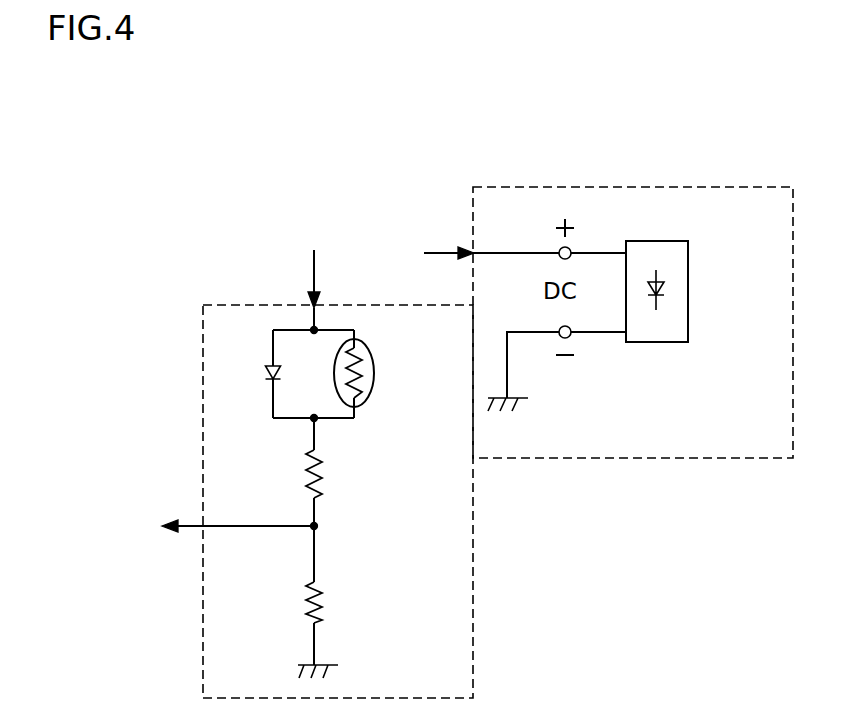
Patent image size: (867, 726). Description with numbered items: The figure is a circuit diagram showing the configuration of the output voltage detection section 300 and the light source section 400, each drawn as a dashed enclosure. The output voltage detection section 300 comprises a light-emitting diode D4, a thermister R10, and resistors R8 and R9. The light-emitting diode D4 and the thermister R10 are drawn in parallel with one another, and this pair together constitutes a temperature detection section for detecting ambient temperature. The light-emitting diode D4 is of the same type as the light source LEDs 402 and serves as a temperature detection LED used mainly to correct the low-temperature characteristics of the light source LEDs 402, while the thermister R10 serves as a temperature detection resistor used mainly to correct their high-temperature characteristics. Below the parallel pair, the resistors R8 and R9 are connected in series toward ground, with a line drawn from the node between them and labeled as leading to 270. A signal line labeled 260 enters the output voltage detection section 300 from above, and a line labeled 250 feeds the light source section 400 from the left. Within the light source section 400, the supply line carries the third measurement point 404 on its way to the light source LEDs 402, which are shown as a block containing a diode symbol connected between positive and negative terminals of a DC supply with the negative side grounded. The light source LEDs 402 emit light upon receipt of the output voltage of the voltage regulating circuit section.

The output voltage detection section 300 is at (203, 631).
The light source section 400 is at (719, 184).
The input line 260 is at (312, 263).
The power supply input line 250 is at (426, 254).
The third measurement point 404 is at (600, 253).
The light source LEDs 402 is at (690, 270).
The light-emitting diode D4 is at (267, 370).
The thermister R10 is at (376, 373).
The resistor R8 is at (326, 491).
The resistor R9 is at (326, 619).
The output to 270 is at (197, 527).